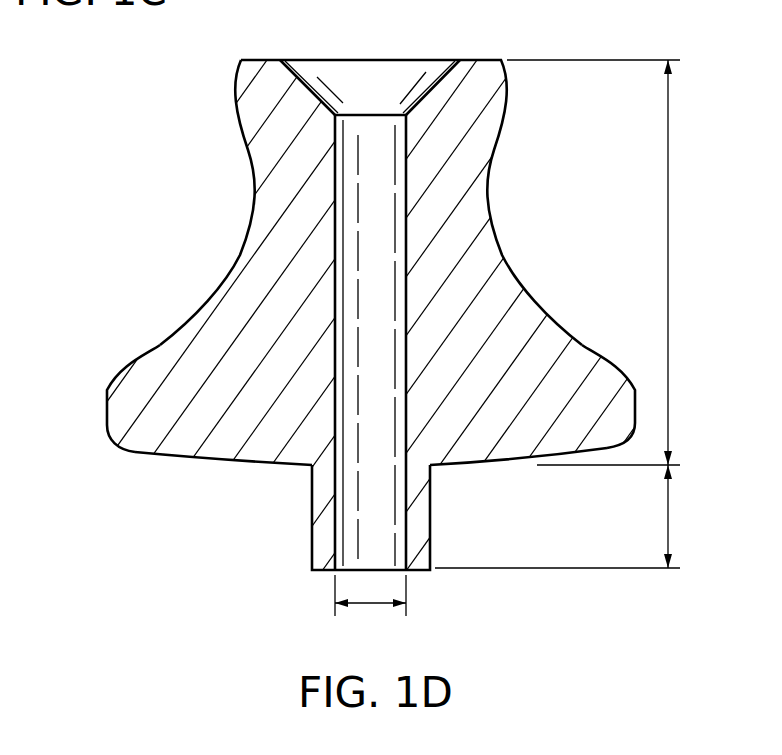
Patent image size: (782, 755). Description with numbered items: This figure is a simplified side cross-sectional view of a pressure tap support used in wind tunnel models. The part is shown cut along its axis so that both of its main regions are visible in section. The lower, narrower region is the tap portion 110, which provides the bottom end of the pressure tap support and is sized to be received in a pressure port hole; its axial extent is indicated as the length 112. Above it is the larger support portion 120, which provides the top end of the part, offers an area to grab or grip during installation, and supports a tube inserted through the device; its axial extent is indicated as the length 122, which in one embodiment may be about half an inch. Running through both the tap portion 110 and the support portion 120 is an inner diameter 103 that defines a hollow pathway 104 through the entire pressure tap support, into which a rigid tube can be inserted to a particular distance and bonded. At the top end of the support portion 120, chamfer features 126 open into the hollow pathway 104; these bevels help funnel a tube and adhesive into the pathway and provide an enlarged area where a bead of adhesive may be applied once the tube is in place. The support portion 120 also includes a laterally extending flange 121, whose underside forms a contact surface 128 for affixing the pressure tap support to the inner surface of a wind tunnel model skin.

The inner diameter 103 is at (372, 606).
The hollow pathway 104 is at (369, 97).
The tap portion 110 is at (292, 551).
The length 112 is at (669, 515).
The support portion 120 is at (216, 230).
The flange 121 is at (72, 357).
The length 122 is at (669, 262).
The chamfer features 126 is at (428, 80).
The contact surface 128 is at (178, 460).